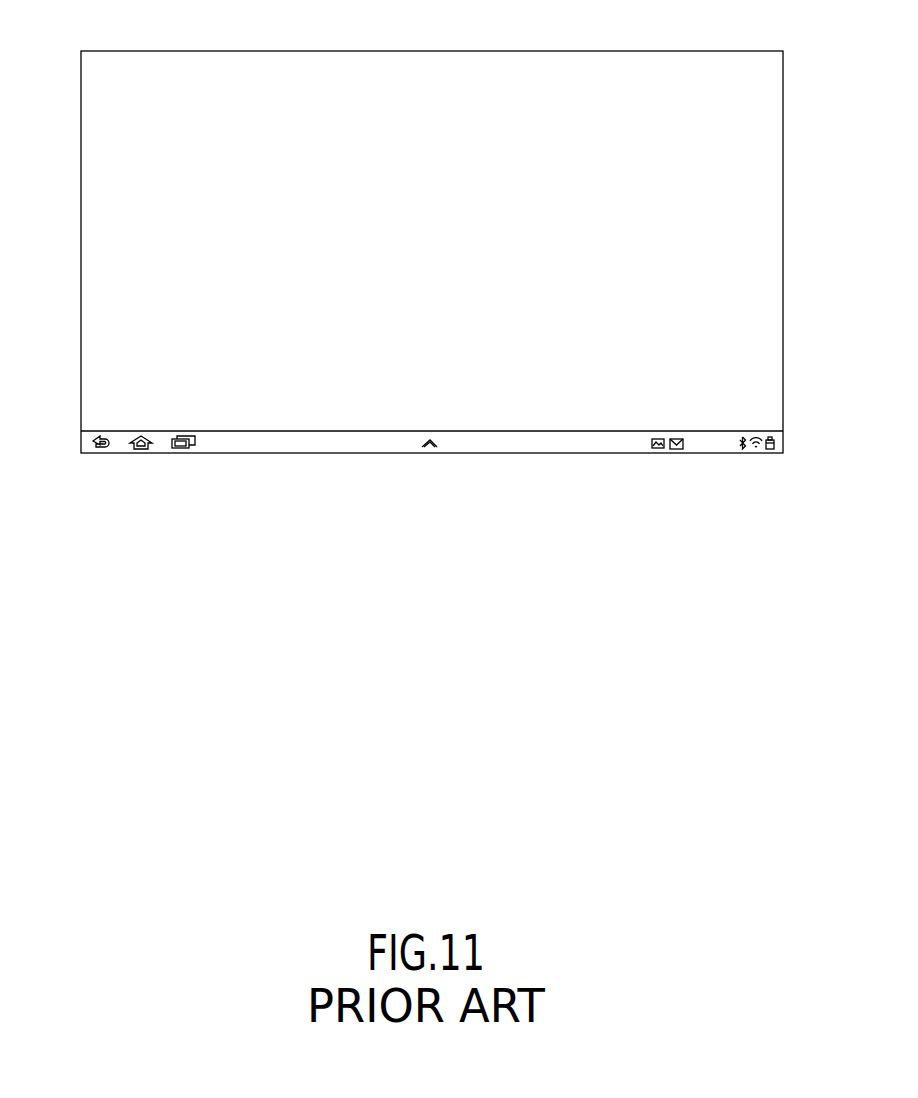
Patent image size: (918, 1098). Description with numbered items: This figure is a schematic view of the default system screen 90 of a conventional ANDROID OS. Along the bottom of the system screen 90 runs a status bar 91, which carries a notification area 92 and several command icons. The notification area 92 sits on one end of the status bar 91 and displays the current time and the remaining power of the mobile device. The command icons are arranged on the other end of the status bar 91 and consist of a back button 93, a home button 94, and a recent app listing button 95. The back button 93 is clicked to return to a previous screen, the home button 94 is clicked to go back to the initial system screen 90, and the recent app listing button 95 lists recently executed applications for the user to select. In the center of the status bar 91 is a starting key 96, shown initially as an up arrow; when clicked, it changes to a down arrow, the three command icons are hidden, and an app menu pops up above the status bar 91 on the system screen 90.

The system screen 90 is at (333, 66).
The status bar 91 is at (322, 445).
The notification area 92 is at (708, 452).
The back button 93 is at (101, 449).
The home button 94 is at (141, 451).
The recent app listing button 95 is at (183, 451).
The starting key 96 is at (432, 448).